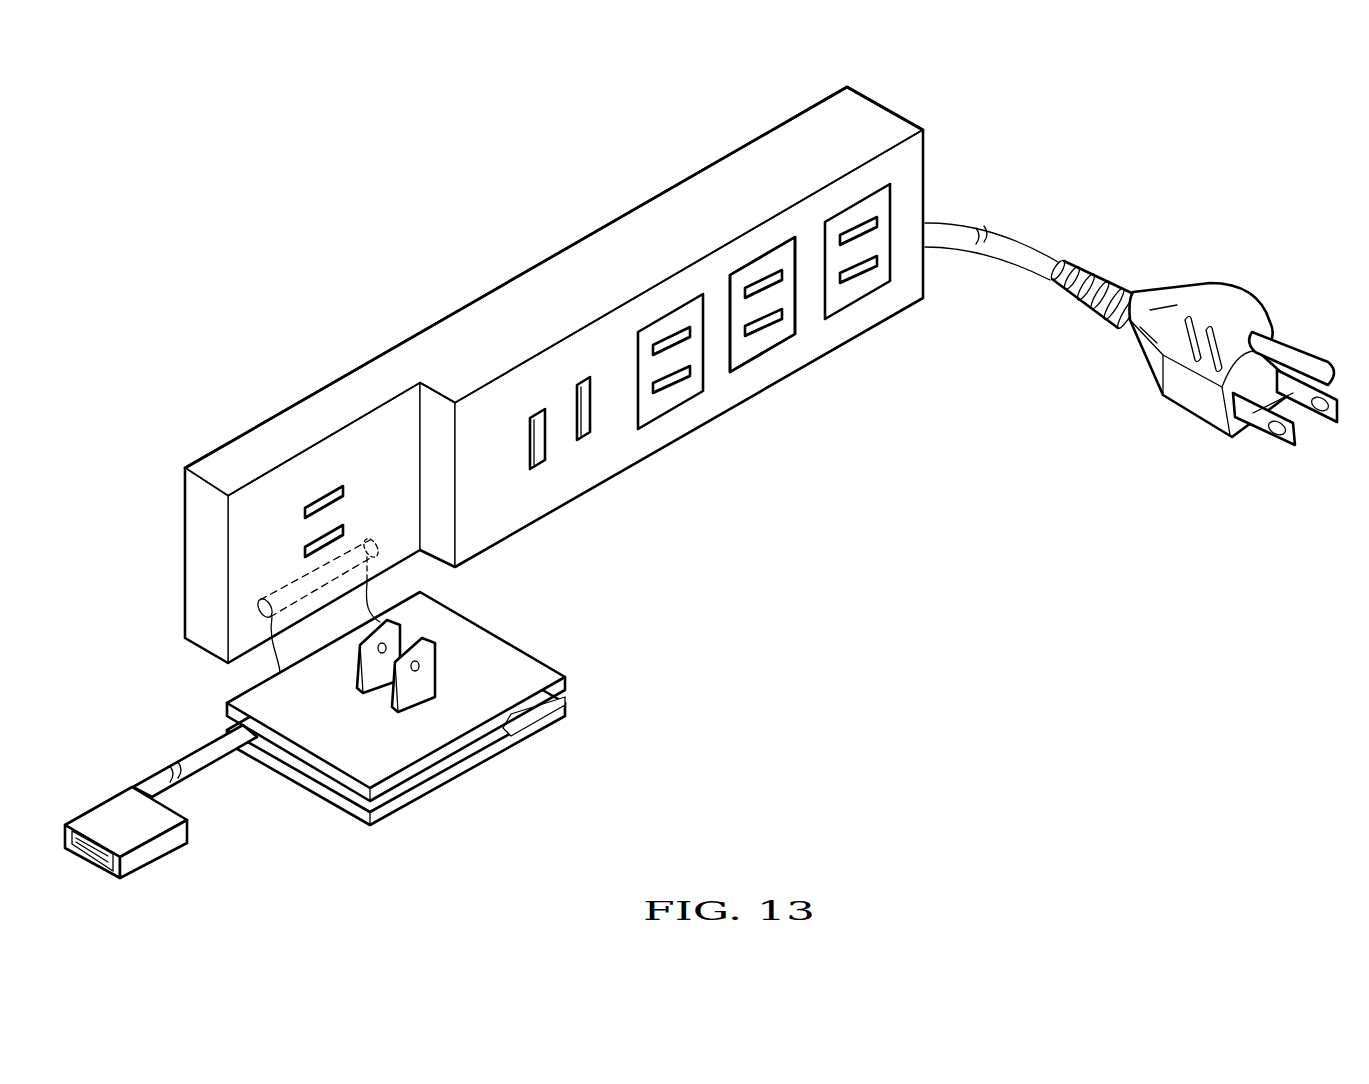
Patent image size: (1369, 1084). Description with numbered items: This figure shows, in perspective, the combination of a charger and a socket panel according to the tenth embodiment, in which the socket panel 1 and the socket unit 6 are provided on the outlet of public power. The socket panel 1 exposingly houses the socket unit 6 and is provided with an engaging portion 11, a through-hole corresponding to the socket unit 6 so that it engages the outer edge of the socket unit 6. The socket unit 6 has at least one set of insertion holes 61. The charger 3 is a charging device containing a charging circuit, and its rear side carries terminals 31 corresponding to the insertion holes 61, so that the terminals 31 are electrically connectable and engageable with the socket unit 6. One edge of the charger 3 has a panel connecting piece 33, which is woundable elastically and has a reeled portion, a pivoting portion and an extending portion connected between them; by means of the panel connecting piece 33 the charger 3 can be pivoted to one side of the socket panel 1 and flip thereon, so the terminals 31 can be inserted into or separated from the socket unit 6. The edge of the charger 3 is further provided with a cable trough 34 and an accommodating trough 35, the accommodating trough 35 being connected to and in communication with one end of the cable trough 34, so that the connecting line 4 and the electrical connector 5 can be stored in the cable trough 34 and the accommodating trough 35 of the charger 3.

The socket panel 1 is at (207, 451).
The engaging portion 11 is at (797, 313).
The charger 3 is at (538, 649).
The terminals 31 is at (417, 683).
The panel connecting piece 33 is at (355, 597).
The cable trough 34 is at (395, 792).
The accommodating trough 35 is at (535, 708).
The connecting line 4 is at (150, 767).
The electrical connector 5 is at (97, 802).
The socket unit 6 is at (743, 368).
The insertion holes 61 is at (773, 322).